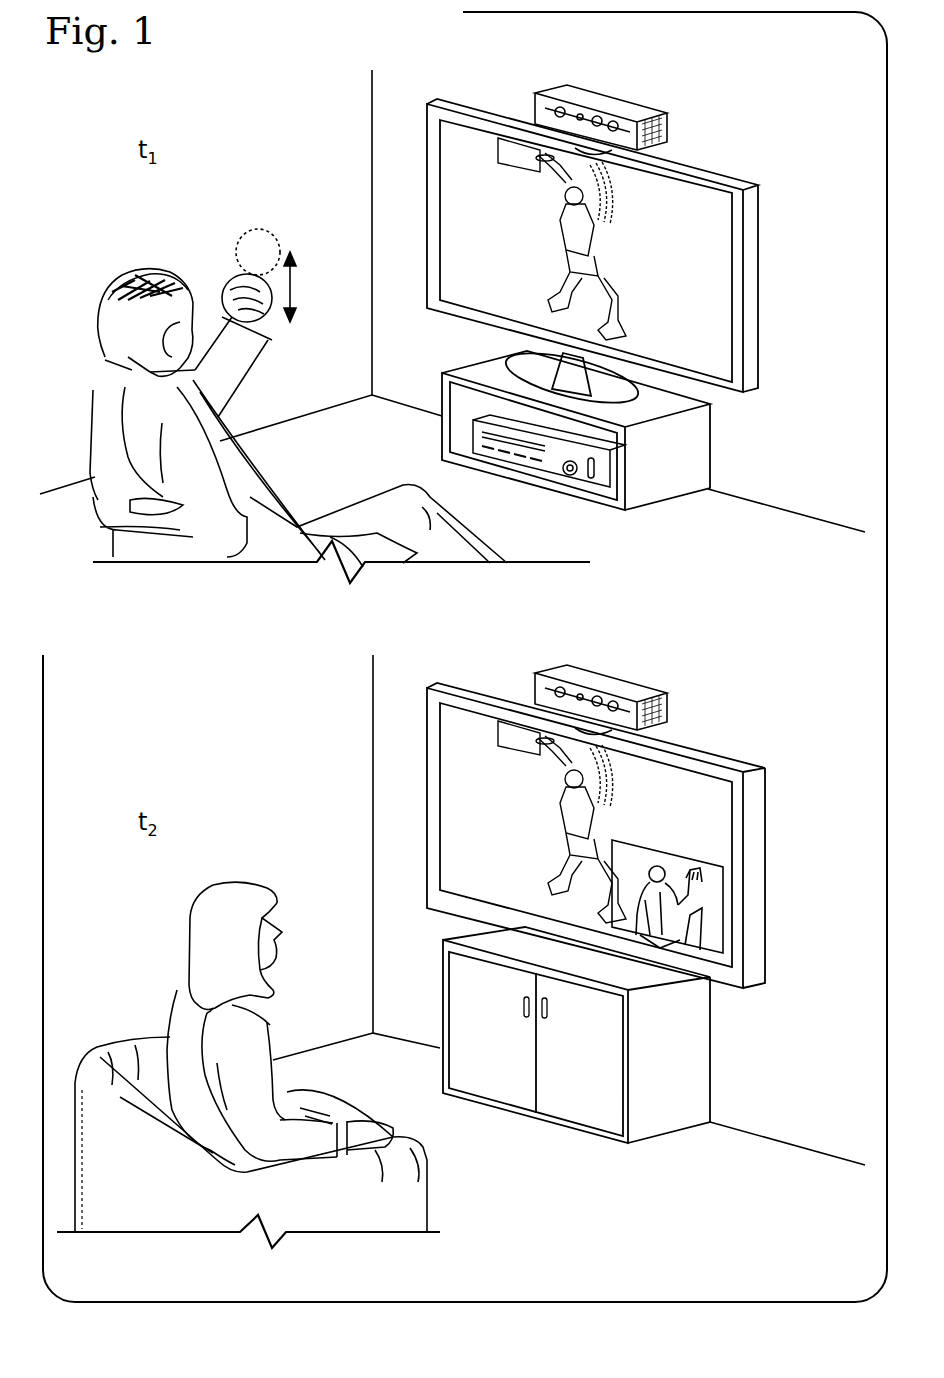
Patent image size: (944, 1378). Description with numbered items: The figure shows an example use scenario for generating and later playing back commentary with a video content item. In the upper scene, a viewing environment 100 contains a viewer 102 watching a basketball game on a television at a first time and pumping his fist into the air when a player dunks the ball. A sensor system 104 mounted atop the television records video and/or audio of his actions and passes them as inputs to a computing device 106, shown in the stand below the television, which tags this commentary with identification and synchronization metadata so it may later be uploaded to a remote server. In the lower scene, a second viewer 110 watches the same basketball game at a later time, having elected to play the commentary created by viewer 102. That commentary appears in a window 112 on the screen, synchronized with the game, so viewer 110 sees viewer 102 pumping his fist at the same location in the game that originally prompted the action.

The viewing environment 100 is at (168, 100).
The viewer 102 is at (97, 317).
The sensor system 104 is at (640, 114).
The computing device 106 is at (556, 466).
The viewer 110 is at (190, 910).
The window 112 is at (668, 852).